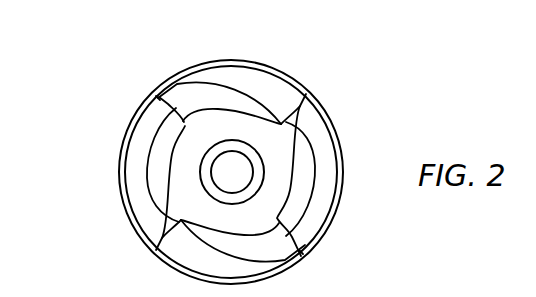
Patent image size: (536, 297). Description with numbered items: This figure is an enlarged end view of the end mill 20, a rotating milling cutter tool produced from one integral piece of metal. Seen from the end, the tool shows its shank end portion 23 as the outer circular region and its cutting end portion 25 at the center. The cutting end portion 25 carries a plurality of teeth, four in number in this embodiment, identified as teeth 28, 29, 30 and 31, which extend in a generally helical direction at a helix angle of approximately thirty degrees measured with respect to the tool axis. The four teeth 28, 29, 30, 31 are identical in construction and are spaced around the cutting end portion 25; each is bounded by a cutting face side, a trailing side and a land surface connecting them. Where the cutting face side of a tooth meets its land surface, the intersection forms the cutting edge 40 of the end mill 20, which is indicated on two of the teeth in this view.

The end mill 20 is at (103, 190).
The shank end portion 23 is at (238, 61).
The cutting end portion 25 is at (283, 173).
The tooth 28 is at (298, 256).
The tooth 29 is at (158, 234).
The tooth 30 is at (161, 93).
The tooth 31 is at (307, 115).
The cutting edge 40 is at (158, 98).